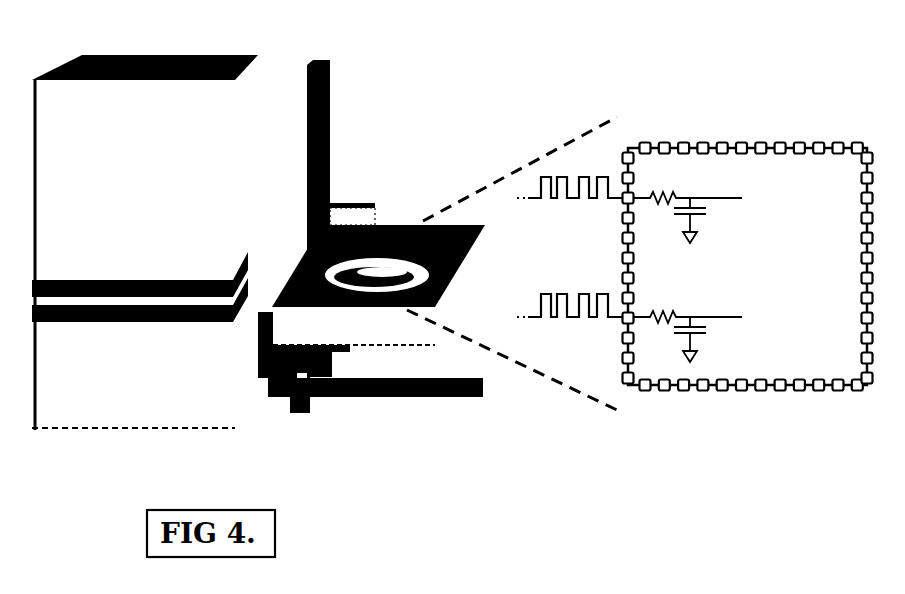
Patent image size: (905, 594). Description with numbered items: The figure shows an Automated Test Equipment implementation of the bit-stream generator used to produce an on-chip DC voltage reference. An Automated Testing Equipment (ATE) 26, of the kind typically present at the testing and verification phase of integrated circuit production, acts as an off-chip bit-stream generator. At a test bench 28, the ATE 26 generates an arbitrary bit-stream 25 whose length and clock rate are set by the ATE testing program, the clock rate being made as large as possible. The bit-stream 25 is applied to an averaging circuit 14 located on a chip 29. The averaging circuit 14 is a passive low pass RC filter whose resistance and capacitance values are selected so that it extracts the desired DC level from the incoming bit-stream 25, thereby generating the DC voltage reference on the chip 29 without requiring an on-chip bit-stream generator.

The averaging circuit 14 is at (746, 226).
The bit-stream 25 is at (549, 224).
The Automated Testing Equipment (ATE) 26 is at (262, 72).
The test bench 28 is at (333, 78).
The chip 29 is at (746, 142).